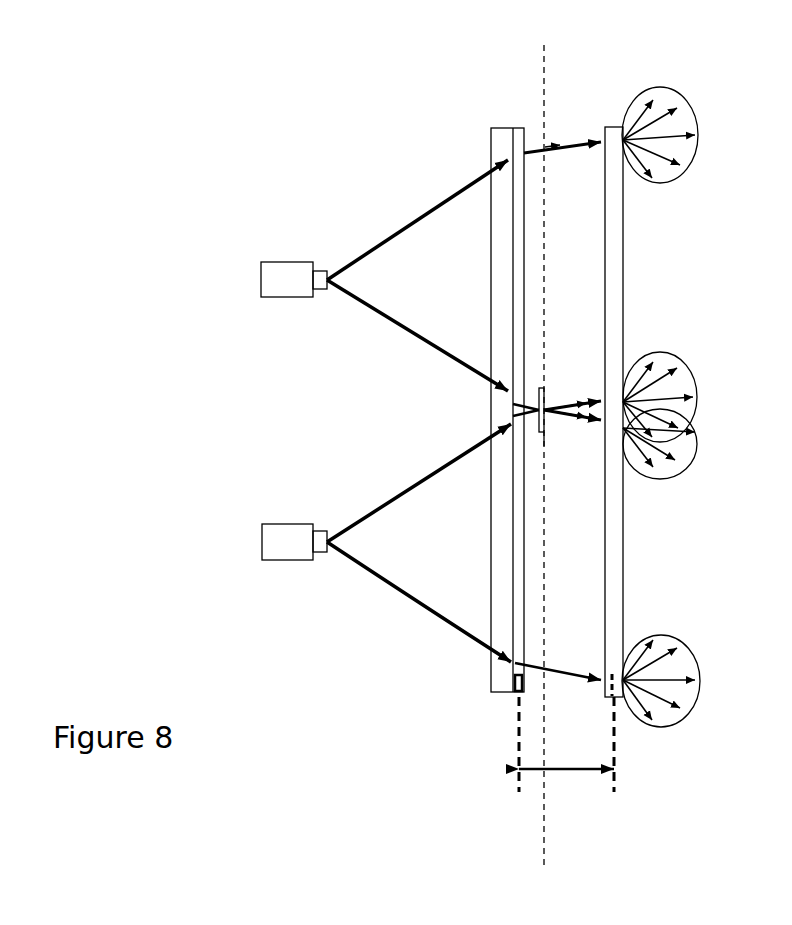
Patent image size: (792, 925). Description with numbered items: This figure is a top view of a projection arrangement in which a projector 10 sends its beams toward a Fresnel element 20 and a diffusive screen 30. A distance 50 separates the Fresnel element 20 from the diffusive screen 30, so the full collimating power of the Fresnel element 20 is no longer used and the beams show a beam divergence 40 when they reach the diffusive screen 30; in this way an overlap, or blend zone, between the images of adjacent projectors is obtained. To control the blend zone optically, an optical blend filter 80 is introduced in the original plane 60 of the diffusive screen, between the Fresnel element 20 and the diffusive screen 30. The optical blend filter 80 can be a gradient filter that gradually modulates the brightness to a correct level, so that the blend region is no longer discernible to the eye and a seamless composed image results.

The projector 10 is at (280, 258).
The Fresnel element 20 is at (516, 125).
The diffusive screen 30 is at (619, 118).
The beam divergence 40 is at (586, 406).
The distance 50 is at (582, 773).
The original plane of the diffusive screen 60 is at (548, 444).
The optical blend filter 80 is at (548, 386).